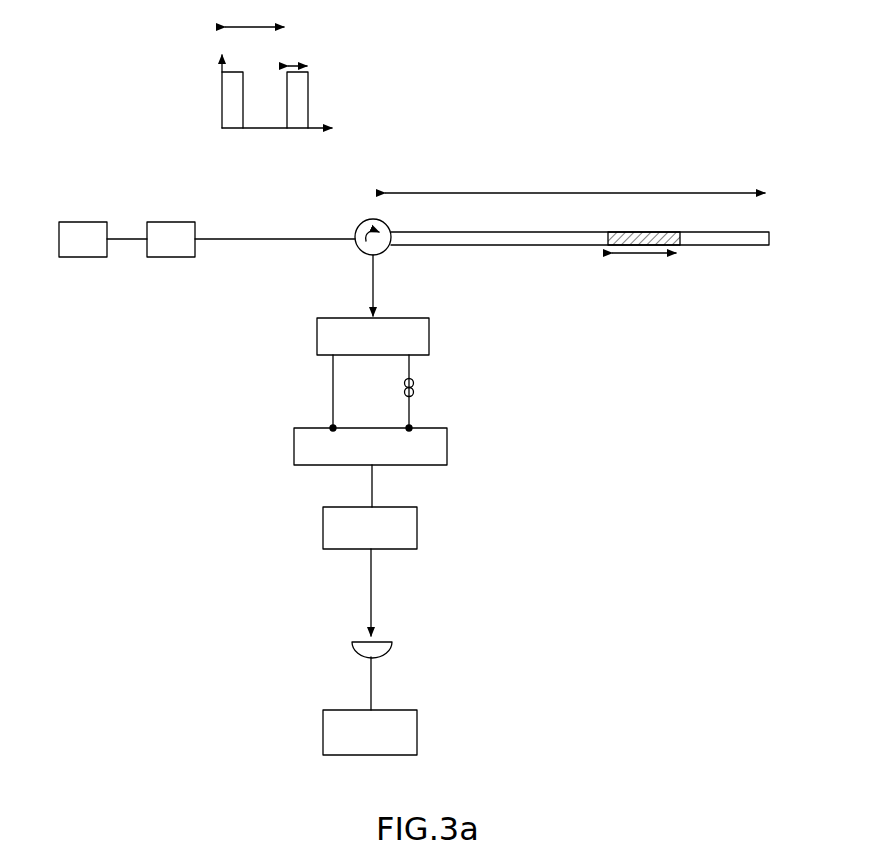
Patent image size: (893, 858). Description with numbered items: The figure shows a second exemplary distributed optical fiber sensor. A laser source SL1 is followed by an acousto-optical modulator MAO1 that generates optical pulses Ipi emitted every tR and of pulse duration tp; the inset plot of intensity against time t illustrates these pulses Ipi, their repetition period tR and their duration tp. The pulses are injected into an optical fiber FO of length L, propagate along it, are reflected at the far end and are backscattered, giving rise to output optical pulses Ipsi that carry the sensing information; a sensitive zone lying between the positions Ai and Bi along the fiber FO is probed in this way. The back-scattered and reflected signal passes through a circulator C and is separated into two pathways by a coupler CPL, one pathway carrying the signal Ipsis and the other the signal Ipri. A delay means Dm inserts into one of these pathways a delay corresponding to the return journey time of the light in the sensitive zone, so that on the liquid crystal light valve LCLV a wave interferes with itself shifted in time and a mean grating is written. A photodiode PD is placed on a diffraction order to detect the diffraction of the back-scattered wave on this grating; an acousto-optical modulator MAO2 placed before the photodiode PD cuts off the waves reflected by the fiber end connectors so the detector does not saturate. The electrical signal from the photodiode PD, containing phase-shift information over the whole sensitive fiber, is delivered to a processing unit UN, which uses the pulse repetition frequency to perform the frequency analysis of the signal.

The laser source SL1 is at (80, 222).
The acousto-optical modulator MAO1 is at (157, 222).
The circulator C is at (354, 244).
The optical fiber FO is at (512, 245).
The length of the optical fiber L is at (575, 180).
The position Ai is at (640, 226).
The position Bi is at (675, 220).
The output optical pulses Ipsi is at (393, 285).
The coupler CPL is at (429, 335).
The coupler output (straight path) Ipsis is at (333, 374).
The coupler output (delayed path) Ipri is at (409, 366).
The delay means Dm is at (413, 387).
The liquid crystal light valve LCLV is at (447, 445).
The acousto-optical modulator MAO2 is at (417, 527).
The photodiode PD is at (388, 650).
The processing unit UN is at (417, 730).
The optical pulses Ipi is at (303, 97).
The pulse repetition period tR is at (254, 14).
The pulse duration tp is at (297, 51).
The time axis t is at (345, 127).